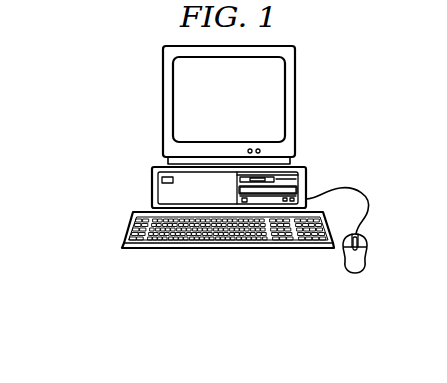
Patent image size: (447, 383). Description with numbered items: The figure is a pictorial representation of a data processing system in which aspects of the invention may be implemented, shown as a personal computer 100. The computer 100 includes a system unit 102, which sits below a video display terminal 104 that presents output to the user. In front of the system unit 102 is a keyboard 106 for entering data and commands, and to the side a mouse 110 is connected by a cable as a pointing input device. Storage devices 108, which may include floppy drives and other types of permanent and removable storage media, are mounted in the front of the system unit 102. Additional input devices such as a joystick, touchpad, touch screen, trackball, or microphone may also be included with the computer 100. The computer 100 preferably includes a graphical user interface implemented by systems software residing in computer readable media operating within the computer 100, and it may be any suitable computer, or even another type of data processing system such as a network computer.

The computer 100 is at (104, 89).
The system unit 102 is at (152, 183).
The video display terminal 104 is at (296, 103).
The keyboard 106 is at (145, 249).
The storage devices 108 is at (297, 181).
The mouse 110 is at (353, 273).